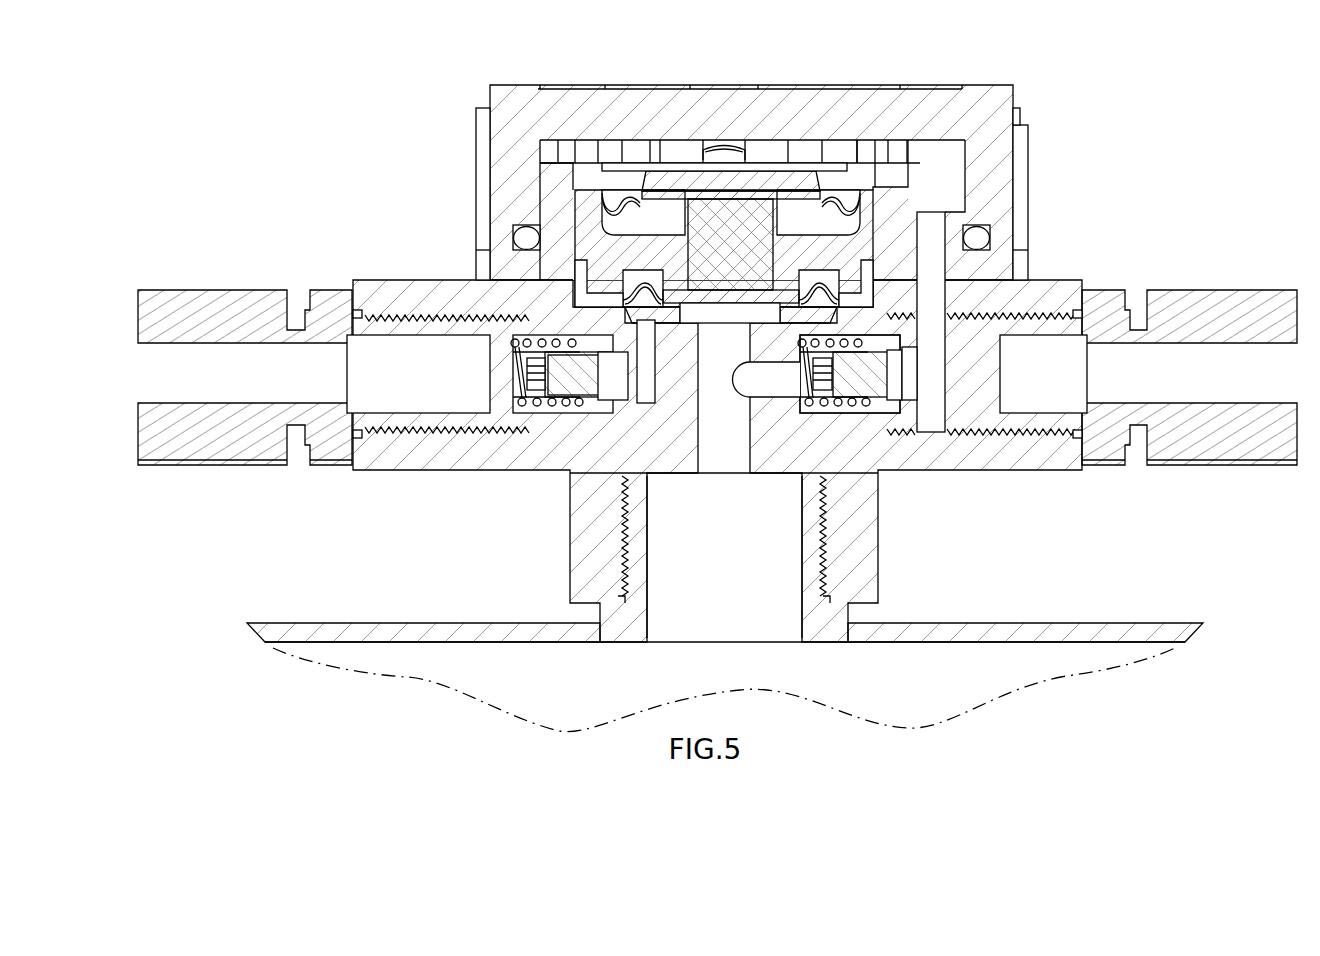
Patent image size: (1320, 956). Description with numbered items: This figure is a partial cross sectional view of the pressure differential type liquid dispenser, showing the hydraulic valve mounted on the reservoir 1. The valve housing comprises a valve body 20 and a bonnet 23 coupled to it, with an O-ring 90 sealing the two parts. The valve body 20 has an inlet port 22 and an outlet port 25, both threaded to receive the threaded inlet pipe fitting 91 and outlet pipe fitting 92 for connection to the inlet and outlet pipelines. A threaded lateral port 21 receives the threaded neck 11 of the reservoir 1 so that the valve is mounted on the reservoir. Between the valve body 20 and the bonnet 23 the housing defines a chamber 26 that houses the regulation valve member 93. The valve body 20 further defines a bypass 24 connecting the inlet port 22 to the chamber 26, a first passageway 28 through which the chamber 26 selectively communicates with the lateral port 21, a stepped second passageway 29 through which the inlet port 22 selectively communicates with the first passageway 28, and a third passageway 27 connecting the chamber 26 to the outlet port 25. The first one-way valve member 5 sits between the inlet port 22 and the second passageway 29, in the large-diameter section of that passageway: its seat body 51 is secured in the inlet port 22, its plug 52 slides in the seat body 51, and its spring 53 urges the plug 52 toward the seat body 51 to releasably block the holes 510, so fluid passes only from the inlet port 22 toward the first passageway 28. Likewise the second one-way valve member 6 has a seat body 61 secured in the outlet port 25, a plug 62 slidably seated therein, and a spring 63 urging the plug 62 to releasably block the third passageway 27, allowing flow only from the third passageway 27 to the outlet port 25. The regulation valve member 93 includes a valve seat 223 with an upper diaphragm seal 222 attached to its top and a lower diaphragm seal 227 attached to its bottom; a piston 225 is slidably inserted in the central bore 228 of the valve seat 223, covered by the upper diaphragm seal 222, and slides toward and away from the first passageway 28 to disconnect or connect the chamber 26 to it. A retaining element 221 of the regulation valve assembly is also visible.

The reservoir 1 is at (1118, 632).
The neck 11 is at (633, 567).
The valve body 20 is at (393, 450).
The lateral port 21 is at (727, 462).
The inlet port 22 is at (1010, 323).
The bonnet 23 is at (1000, 100).
The bypass 24 is at (927, 220).
The outlet port 25 is at (443, 327).
The chamber 26 is at (585, 207).
The third passageway 27 is at (645, 353).
The first passageway 28 is at (637, 492).
The second passageway 29 is at (772, 380).
The first one-way valve member 5 is at (992, 507).
The seat body 51 is at (897, 427).
The plug 52 is at (852, 380).
The spring 53 is at (862, 410).
The holes 510 is at (907, 358).
The second one-way valve member 6 is at (418, 497).
The seat body 61 is at (507, 428).
The plug 62 is at (572, 382).
The spring 63 is at (543, 407).
The O-ring 90 is at (523, 240).
The inlet pipe fitting 91 is at (1208, 308).
The outlet pipe fitting 92 is at (193, 310).
The regulation valve member 93 is at (755, 44).
The retaining plate 221 is at (863, 173).
The upper diaphragm seal 222 is at (730, 197).
The valve seat 223 is at (578, 185).
The piston 225 is at (707, 205).
The lower diaphragm seal 227 is at (875, 283).
The central bore 228 is at (760, 240).